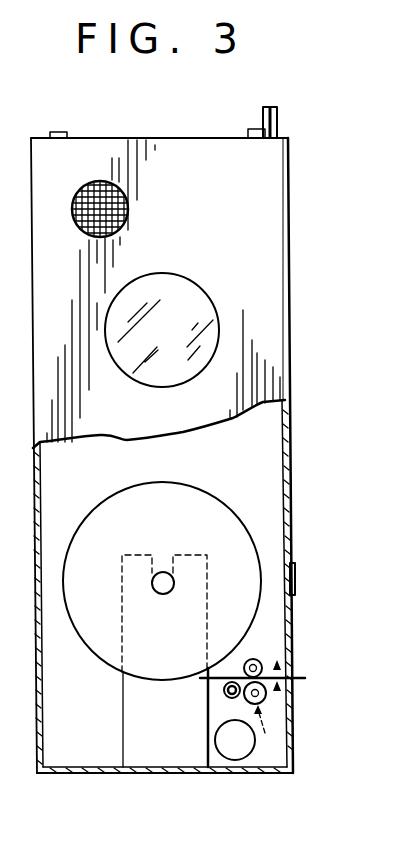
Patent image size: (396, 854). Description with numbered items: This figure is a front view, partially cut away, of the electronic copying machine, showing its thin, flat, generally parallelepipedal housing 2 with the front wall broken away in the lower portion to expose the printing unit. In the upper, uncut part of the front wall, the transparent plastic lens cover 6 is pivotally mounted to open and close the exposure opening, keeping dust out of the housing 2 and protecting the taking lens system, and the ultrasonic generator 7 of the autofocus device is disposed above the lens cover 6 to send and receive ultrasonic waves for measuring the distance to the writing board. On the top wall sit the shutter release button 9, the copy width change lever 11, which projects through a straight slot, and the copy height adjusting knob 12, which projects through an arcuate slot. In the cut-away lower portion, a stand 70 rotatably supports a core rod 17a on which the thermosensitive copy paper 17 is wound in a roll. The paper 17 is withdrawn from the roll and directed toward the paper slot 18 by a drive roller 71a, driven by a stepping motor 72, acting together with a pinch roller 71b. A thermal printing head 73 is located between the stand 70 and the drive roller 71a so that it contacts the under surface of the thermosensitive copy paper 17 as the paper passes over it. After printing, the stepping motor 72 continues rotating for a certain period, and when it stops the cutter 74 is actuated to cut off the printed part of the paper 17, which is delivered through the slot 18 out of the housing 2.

The housing 2 is at (297, 328).
The lens cover 6 is at (187, 302).
The ultrasonic generator 7 is at (102, 181).
The shutter release button 9 is at (255, 128).
The copy width change lever 11 is at (60, 131).
The copy height adjusting knob 12 is at (277, 123).
The thermosensitive copy paper 17 is at (227, 500).
The core rod 17a is at (175, 583).
The paper slot 18 is at (292, 676).
The stand 70 is at (128, 718).
The drive roller 71a is at (264, 701).
The pinch roller 71b is at (247, 661).
The stepping motor 72 is at (236, 761).
The thermal printing head 73 is at (226, 698).
The cutter 74 is at (279, 660).